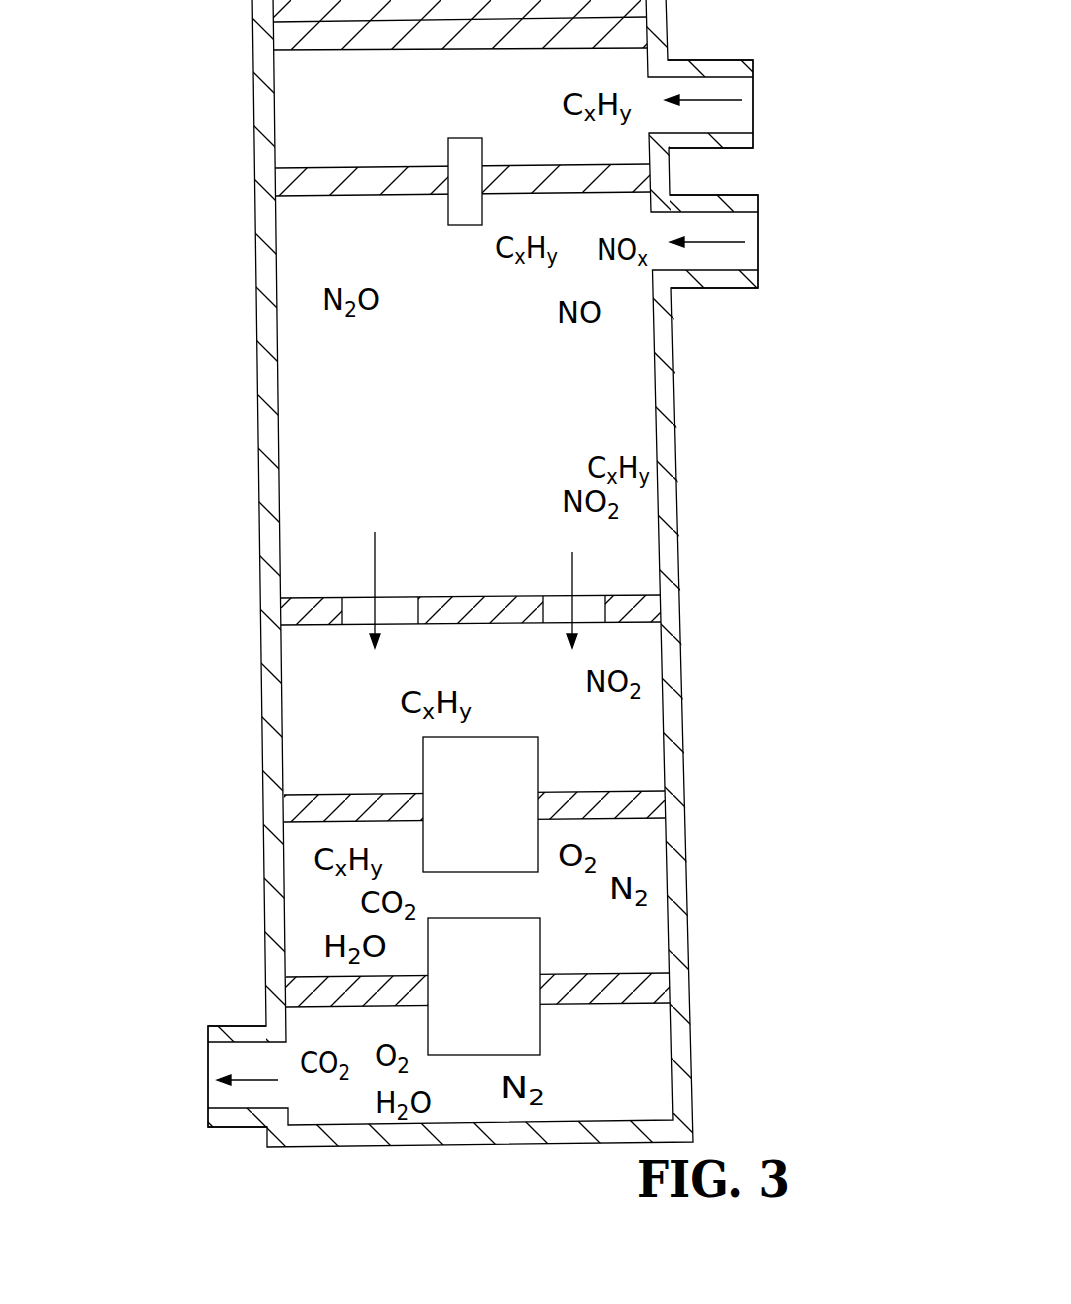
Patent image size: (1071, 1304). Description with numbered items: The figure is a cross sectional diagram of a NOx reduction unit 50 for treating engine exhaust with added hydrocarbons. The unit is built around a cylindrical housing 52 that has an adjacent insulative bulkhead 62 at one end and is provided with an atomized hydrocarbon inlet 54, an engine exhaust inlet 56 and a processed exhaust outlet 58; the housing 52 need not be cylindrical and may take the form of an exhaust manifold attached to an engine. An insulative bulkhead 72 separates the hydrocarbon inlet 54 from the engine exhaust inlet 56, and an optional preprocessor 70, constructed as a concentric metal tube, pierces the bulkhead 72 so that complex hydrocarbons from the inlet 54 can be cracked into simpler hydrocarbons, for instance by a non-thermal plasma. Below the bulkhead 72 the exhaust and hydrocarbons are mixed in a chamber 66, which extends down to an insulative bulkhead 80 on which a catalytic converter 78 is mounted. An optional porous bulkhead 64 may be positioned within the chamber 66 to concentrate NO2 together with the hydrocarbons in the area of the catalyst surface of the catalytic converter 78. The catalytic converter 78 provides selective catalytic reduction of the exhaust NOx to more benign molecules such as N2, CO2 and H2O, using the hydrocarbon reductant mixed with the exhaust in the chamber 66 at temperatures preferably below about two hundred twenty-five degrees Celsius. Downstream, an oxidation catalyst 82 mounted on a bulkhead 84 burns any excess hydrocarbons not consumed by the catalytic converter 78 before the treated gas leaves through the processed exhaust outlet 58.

The NOx reduction unit 50 is at (178, 113).
The housing 52 is at (466, 573).
The atomized hydrocarbon inlet 54 is at (770, 74).
The engine exhaust inlet 56 is at (782, 269).
The processed exhaust outlet 58 is at (158, 1036).
The insulative bulkhead 62 is at (460, 50).
The porous bulkhead 64 is at (471, 572).
The chamber 66 is at (432, 427).
The preprocessor 70 is at (495, 154).
The insulative bulkhead 72 is at (462, 205).
The catalytic converter 78 is at (493, 766).
The insulative bulkhead 80 is at (474, 773).
The oxidation catalyst 82 is at (515, 972).
The bulkhead 84 is at (478, 957).